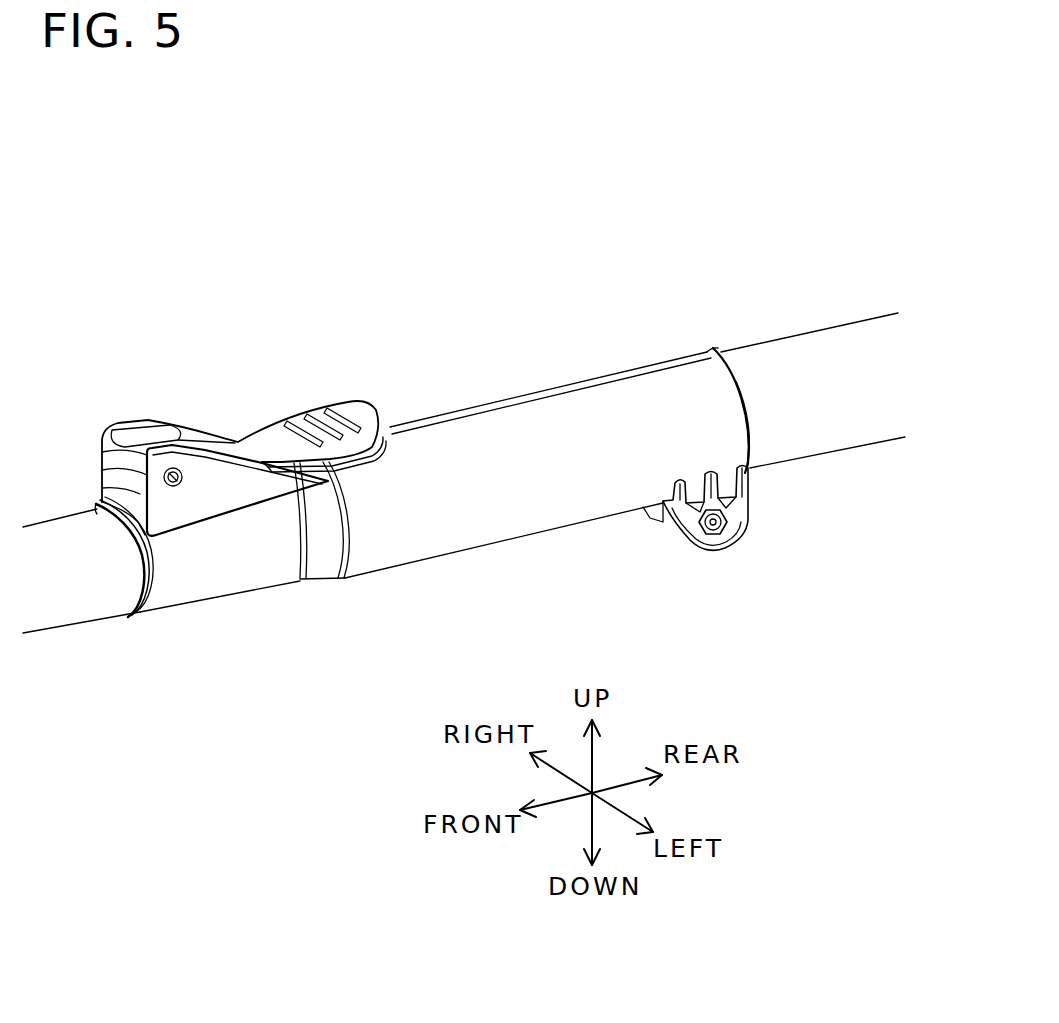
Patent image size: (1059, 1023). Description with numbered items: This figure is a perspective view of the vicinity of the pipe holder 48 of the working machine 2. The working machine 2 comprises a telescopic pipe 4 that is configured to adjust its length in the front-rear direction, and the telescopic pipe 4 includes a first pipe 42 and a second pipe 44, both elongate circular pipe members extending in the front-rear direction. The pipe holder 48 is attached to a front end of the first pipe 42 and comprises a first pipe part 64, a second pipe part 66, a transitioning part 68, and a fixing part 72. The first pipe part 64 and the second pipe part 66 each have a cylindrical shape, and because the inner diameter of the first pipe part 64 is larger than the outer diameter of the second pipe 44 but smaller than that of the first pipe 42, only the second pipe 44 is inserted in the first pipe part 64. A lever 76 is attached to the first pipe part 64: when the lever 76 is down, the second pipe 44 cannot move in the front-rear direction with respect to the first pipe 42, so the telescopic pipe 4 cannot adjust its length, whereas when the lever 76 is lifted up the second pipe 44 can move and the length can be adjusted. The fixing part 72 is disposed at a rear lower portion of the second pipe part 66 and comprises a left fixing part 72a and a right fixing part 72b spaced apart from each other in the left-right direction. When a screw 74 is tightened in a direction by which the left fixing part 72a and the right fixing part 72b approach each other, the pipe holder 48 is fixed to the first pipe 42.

The working machine 2 is at (138, 212).
The telescopic pipe 4 is at (704, 277).
The first pipe 42 is at (810, 345).
The second pipe 44 is at (55, 530).
The pipe holder 48 is at (515, 410).
The first pipe part 64 is at (190, 588).
The second pipe part 66 is at (428, 540).
The transitioning part 68 is at (322, 553).
The fixing part 72 is at (680, 560).
The left fixing part 72a is at (740, 518).
The right fixing part 72b is at (642, 507).
The screw 74 is at (725, 535).
The lever 76 is at (238, 442).